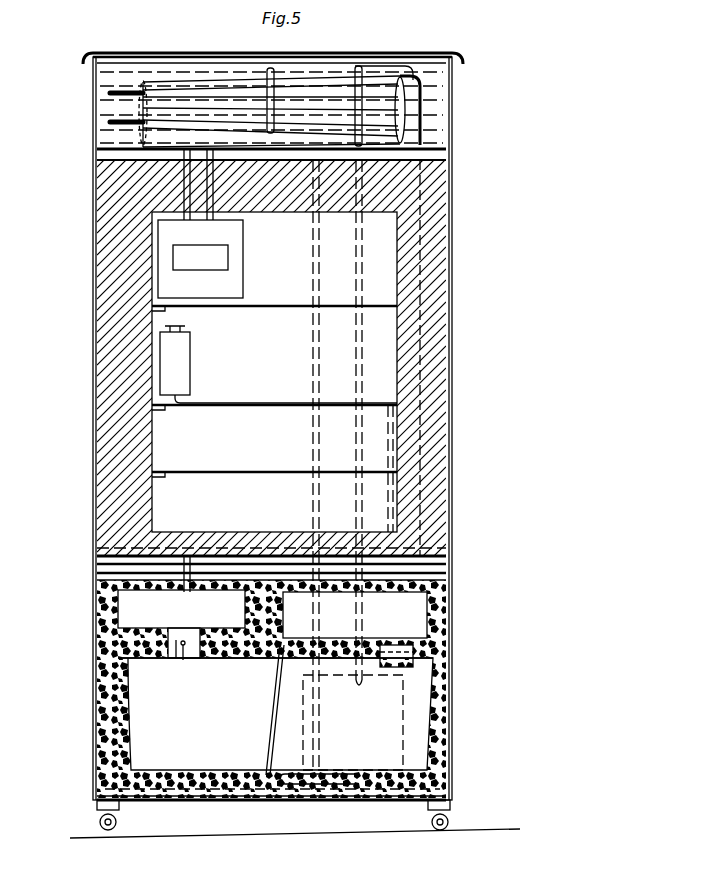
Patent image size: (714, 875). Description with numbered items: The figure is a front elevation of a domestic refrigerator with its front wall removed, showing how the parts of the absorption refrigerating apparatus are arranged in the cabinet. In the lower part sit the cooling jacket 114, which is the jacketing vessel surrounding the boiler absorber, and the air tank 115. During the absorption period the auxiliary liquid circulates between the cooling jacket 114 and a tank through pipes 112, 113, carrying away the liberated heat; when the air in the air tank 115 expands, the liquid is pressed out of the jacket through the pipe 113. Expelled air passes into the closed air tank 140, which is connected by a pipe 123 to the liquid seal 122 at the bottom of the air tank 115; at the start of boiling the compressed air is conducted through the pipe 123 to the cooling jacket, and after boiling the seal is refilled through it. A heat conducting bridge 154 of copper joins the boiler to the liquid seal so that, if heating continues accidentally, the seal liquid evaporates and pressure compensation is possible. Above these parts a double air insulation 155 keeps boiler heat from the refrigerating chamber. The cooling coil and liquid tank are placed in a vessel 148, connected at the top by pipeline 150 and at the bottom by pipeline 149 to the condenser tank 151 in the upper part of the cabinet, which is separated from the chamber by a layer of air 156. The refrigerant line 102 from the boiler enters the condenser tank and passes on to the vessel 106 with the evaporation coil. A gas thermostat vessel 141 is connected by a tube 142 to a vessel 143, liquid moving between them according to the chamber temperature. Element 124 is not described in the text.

The refrigerant line 102 is at (452, 183).
The vessel 106 is at (167, 80).
The pipe 112 is at (278, 722).
The pipe 113 is at (298, 782).
The cooling jacket 114 is at (140, 720).
The air tank 115 is at (130, 601).
The liquid seal 122 is at (196, 634).
The pipe 123 is at (250, 552).
The connection pipe 124 is at (172, 656).
The closed air tank 140 is at (418, 615).
The gas thermostat vessel 141 is at (184, 372).
The tube 142 is at (276, 403).
The vessel 143 is at (440, 650).
The vessel 148 is at (386, 778).
The pipeline 149 is at (314, 285).
The pipeline 150 is at (358, 262).
The condenser tank 151 is at (435, 118).
The heat conducting bridge 154 is at (193, 656).
The double air insulation 155 is at (100, 566).
The layer of air 156 is at (106, 158).